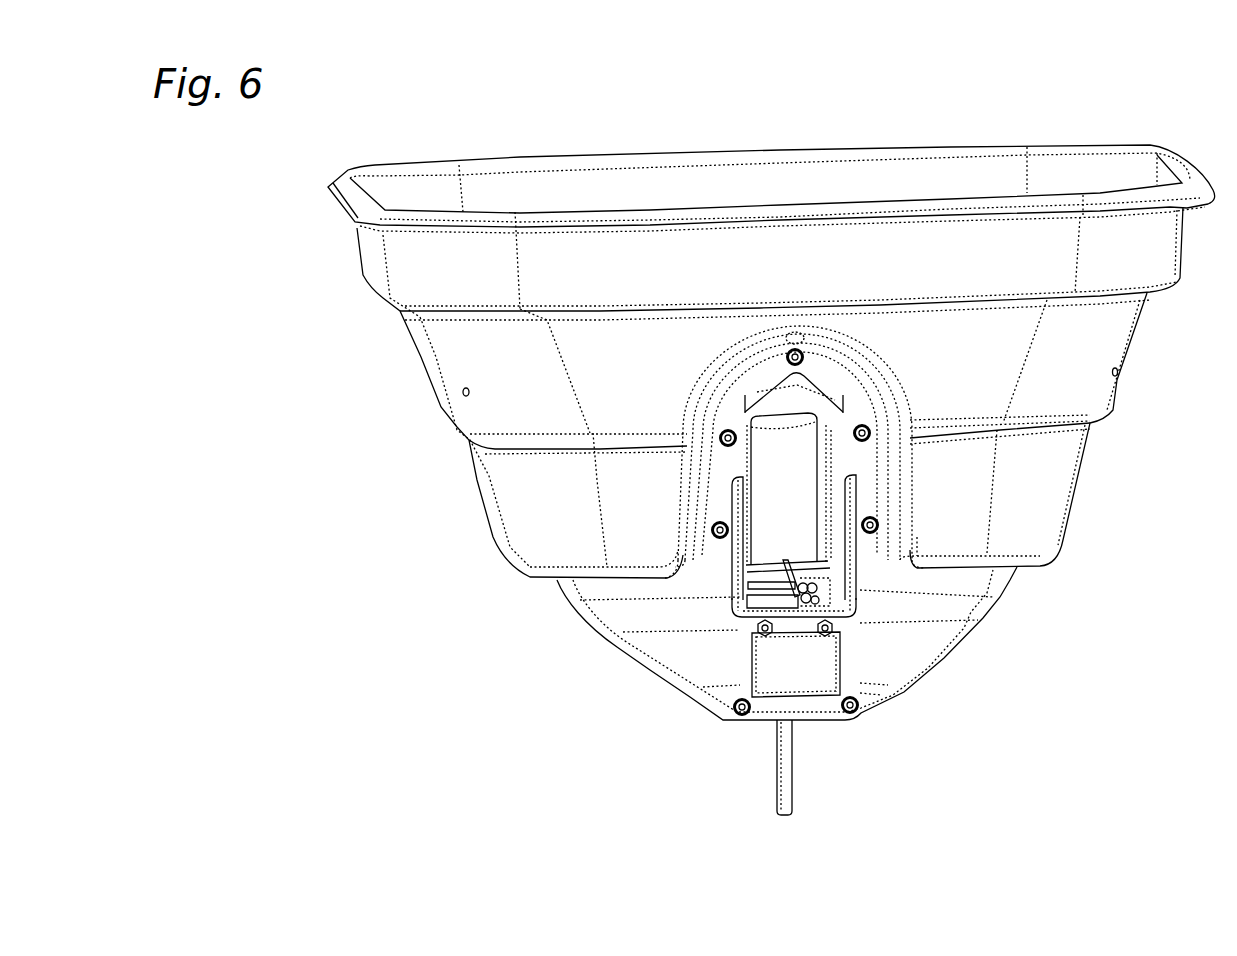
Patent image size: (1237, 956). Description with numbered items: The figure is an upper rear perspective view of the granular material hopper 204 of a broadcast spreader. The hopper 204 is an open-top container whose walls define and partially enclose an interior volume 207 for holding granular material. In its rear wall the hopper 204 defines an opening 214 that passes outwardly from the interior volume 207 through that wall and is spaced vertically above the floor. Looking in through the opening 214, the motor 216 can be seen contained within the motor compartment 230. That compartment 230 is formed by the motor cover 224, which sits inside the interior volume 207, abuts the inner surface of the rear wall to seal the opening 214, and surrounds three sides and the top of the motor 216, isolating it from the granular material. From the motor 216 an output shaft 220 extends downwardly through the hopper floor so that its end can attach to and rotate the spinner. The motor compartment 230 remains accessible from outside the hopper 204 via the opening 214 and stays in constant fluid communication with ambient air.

The granular material hopper 204 is at (363, 255).
The interior volume 207 is at (687, 183).
The motor cover 224 is at (835, 421).
The motor compartment 230 is at (778, 402).
The opening 214 is at (840, 477).
The motor 216 is at (860, 560).
The output shaft 220 is at (790, 773).